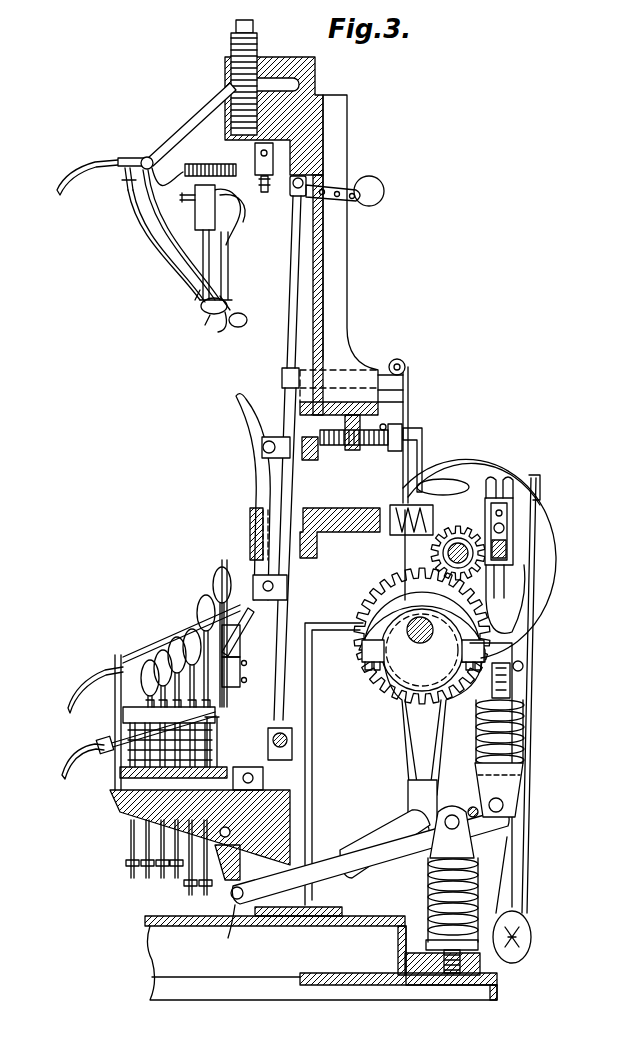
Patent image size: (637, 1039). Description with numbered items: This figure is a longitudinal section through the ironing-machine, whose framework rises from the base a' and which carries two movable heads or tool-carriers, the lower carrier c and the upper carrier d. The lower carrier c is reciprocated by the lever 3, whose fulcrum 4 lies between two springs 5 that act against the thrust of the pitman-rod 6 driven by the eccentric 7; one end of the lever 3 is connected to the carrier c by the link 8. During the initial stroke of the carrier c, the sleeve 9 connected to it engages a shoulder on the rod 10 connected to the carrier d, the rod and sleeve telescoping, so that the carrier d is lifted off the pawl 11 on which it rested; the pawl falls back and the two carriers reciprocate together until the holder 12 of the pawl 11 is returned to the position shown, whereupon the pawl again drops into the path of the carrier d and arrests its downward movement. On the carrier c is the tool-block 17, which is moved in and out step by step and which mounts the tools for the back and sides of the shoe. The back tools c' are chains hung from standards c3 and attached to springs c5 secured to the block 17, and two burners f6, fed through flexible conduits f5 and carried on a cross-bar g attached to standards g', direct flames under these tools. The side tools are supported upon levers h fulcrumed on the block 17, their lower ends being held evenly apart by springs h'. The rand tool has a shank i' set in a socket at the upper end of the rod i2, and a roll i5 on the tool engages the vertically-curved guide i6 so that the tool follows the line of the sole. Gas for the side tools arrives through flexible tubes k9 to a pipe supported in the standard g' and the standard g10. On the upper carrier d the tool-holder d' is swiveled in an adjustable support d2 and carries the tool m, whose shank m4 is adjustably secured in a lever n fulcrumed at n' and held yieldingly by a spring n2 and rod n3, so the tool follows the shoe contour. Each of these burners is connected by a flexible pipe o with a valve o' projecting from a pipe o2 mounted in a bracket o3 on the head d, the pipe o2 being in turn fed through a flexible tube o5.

The head or tool-carrier d is at (301, 253).
The adjustable support d2 is at (252, 58).
The tool-holder d' is at (192, 124).
The lever n is at (243, 194).
The fulcrum n' is at (187, 199).
The spring n2 is at (180, 160).
The rod n3 is at (268, 189).
The rod 10 is at (291, 277).
The pawl 11 is at (330, 185).
The holder 12 is at (366, 207).
The flexible pipe o is at (162, 236).
The valve o' is at (112, 182).
The pipe o2 is at (147, 157).
The bracket o3 is at (182, 128).
The flexible tube o5 is at (95, 172).
The gripper m is at (246, 322).
The shank m4 is at (232, 242).
The vertically-curved guide i6 is at (236, 397).
The roll i5 is at (258, 578).
The sleeve 9 is at (292, 480).
The eccentric 7 is at (410, 673).
The pitman-rod 6 is at (414, 741).
The lever 3 is at (362, 833).
The fulcrum 4 is at (515, 820).
The spring 5 is at (523, 738).
The head or tool-carrier c is at (236, 764).
The base a' is at (321, 969).
The link 8 is at (226, 932).
The standard g' is at (162, 697).
The standard g10 is at (232, 640).
The tool c' is at (171, 706).
The tool-block 17 is at (120, 775).
The standard c3 is at (218, 745).
The rod i2 is at (240, 672).
The shank i' is at (242, 645).
The cross-bar g is at (132, 733).
The burner f6 is at (100, 748).
The flexible tube f5 is at (62, 760).
The spring c5 is at (110, 780).
The flexible tube k9 is at (84, 689).
The lever h is at (147, 857).
The spring h' is at (150, 864).